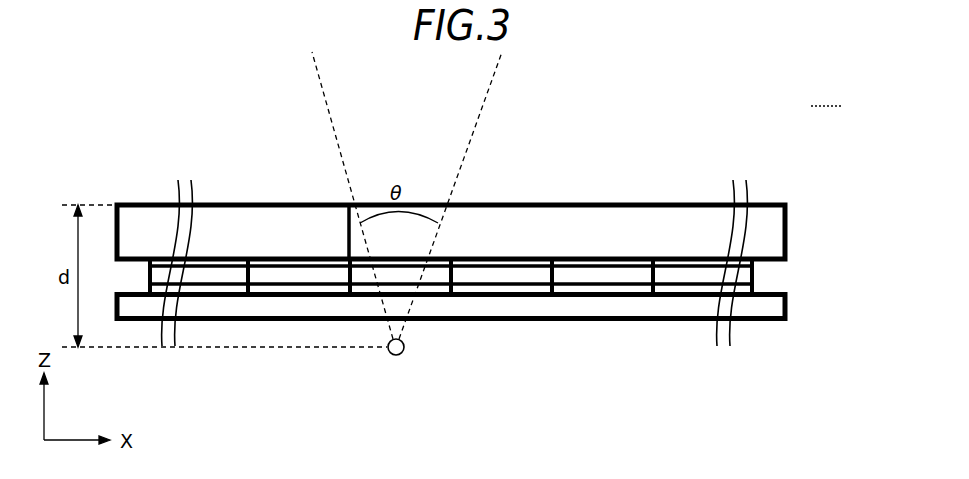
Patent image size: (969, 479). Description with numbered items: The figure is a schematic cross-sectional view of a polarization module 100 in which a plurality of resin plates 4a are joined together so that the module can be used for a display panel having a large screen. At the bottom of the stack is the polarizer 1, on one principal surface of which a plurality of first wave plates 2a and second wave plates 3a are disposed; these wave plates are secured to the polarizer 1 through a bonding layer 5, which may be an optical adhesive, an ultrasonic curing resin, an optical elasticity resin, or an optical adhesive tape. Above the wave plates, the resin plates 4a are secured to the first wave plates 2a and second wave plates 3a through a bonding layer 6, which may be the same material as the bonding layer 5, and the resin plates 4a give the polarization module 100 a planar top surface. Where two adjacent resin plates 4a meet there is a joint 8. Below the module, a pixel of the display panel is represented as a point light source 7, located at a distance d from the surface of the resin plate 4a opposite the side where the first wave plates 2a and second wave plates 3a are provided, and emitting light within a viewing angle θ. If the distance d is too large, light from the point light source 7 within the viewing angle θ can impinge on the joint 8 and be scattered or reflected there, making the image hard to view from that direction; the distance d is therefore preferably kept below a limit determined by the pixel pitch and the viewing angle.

The polarization module 100 is at (828, 95).
The resin plate 4a is at (787, 222).
The bonding layer 6 is at (752, 265).
The bonding layer 5 is at (752, 291).
The polarizer 1 is at (787, 316).
The joint 8 is at (347, 236).
The second wave plate 3a is at (207, 280).
The first wave plate 2a is at (303, 280).
The point light source 7 is at (406, 392).